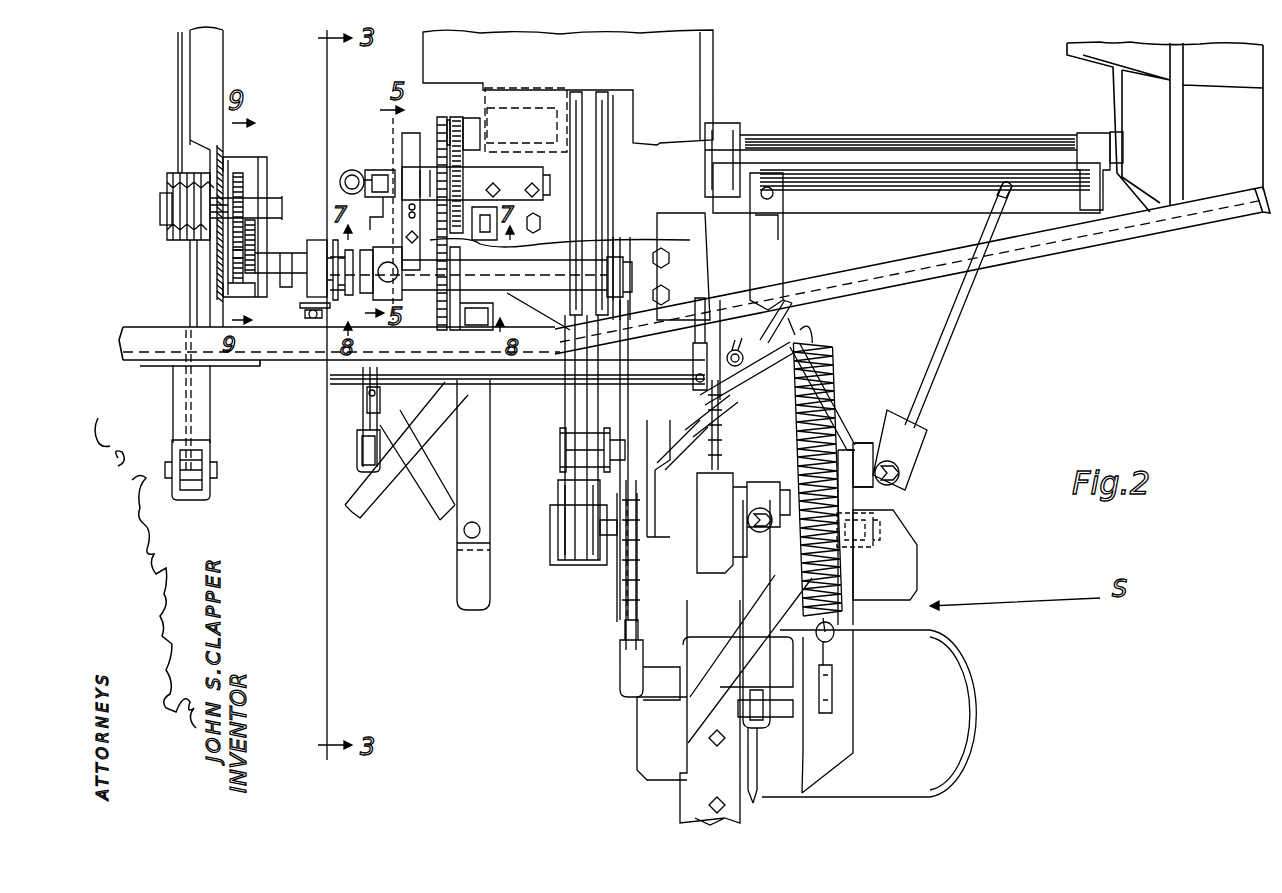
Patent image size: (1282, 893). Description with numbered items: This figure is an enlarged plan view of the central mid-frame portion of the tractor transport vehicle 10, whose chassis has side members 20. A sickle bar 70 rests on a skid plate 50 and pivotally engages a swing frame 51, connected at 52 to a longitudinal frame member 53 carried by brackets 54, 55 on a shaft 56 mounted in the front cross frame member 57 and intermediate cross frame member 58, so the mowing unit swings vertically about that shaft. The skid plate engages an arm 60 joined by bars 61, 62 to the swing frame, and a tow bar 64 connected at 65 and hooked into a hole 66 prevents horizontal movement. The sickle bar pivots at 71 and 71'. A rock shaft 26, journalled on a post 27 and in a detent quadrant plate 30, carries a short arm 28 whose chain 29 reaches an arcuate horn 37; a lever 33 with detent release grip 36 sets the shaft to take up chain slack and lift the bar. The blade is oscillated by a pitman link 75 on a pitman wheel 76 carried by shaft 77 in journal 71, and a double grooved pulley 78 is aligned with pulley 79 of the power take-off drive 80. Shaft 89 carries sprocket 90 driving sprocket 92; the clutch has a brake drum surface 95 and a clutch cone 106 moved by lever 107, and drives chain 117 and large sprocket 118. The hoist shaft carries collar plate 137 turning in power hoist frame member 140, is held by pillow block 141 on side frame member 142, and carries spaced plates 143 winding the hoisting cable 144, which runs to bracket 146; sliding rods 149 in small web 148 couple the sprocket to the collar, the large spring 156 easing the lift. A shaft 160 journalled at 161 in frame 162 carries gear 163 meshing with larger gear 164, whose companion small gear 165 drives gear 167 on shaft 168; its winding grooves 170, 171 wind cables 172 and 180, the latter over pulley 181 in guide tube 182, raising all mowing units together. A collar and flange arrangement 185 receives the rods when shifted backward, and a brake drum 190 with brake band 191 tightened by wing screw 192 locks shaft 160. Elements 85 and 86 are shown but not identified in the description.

The tractor transport vehicle 10 is at (1187, 228).
The side member 20 is at (280, 366).
The rock shaft 26 is at (528, 395).
The post 27 is at (695, 362).
The short arm 28 is at (735, 393).
The chain 29 is at (722, 450).
The detent quadrant plate 30 is at (395, 388).
The lever 33 is at (363, 419).
The detent release grip 36 is at (357, 465).
The arcuate horn 37 is at (367, 406).
The skid plate 50 is at (900, 565).
The swing frame 51 is at (745, 348).
The connection 52 is at (775, 195).
The longitudinal frame member 53 is at (908, 193).
The bracket 54 is at (728, 125).
The bracket 55 is at (1090, 133).
The shaft 56 is at (968, 135).
The front cross frame member 57 is at (1123, 145).
The intermediate cross frame member 58 is at (700, 105).
The arm 60 is at (848, 445).
The bar 61 is at (835, 400).
The bar 62 is at (740, 420).
The tow bar 64 is at (960, 320).
The connection 65 is at (900, 475).
The hole 66 is at (1012, 188).
The sickle bar 70 is at (680, 805).
The pivot journal 71 is at (613, 557).
The pivot 71' is at (890, 520).
The pitman link 75 is at (755, 675).
The pitman wheel 76 is at (714, 500).
The pitman shaft 77 is at (606, 530).
The double grooved pulley 78 is at (558, 495).
The pulley 79 is at (590, 92).
The power take-off drive 80 is at (520, 105).
The pulley 85 is at (560, 452).
The rods 86 is at (590, 410).
The shaft 89 is at (470, 118).
The sprocket wheel 90 is at (458, 117).
The sprocket wheel 92 is at (449, 120).
The brake drum surface 95 is at (430, 140).
The clutch cone 106 is at (375, 170).
The lever 107 is at (350, 170).
The drive chain 117 is at (460, 242).
The large sprocket 118 is at (440, 375).
The collar plate 137 is at (478, 276).
The power hoist frame member 140 is at (545, 290).
The pillow block 141 is at (665, 258).
The side frame member 142 is at (678, 222).
The spaced plates 143 is at (626, 240).
The hoisting cable 144 is at (629, 405).
The bracket 146 is at (620, 688).
The small web 148 is at (380, 303).
The sliding rods 149 is at (450, 322).
The large spring 156 is at (822, 355).
The shaft 160 is at (313, 240).
The journal 161 is at (292, 252).
The frame 162 is at (266, 175).
The gear 163 is at (236, 288).
The larger gear 164 is at (255, 225).
The companion small gear 165 is at (233, 255).
The gear 167 is at (238, 173).
The shaft 168 is at (160, 210).
The winding groove 170 is at (172, 240).
The winding groove 171 is at (185, 178).
The cable 172 is at (180, 100).
The cable 180 is at (193, 277).
The pulley 181 is at (205, 452).
The guide tube 182 is at (205, 405).
The collar and flange arrangement 185 is at (340, 300).
The brake drum 190 is at (332, 292).
The brake band 191 is at (305, 318).
The wing screw 192 is at (300, 308).